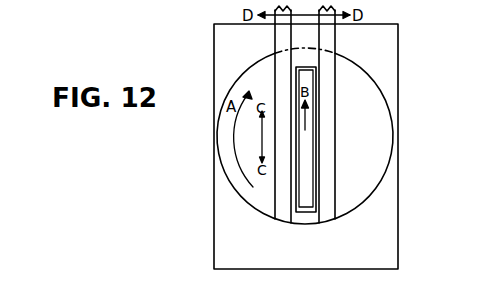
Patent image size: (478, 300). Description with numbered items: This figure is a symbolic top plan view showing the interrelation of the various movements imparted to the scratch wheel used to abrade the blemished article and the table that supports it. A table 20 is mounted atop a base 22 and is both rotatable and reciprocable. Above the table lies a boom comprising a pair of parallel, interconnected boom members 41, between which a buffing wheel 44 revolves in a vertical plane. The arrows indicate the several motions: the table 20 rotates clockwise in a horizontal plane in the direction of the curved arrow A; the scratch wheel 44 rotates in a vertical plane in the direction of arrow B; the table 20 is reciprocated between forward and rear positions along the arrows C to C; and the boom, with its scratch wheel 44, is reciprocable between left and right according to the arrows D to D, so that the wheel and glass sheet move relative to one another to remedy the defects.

The table 20 is at (378, 173).
The base 22 is at (399, 35).
The boom members 41 is at (283, 34).
The buffing wheel 44 is at (314, 128).